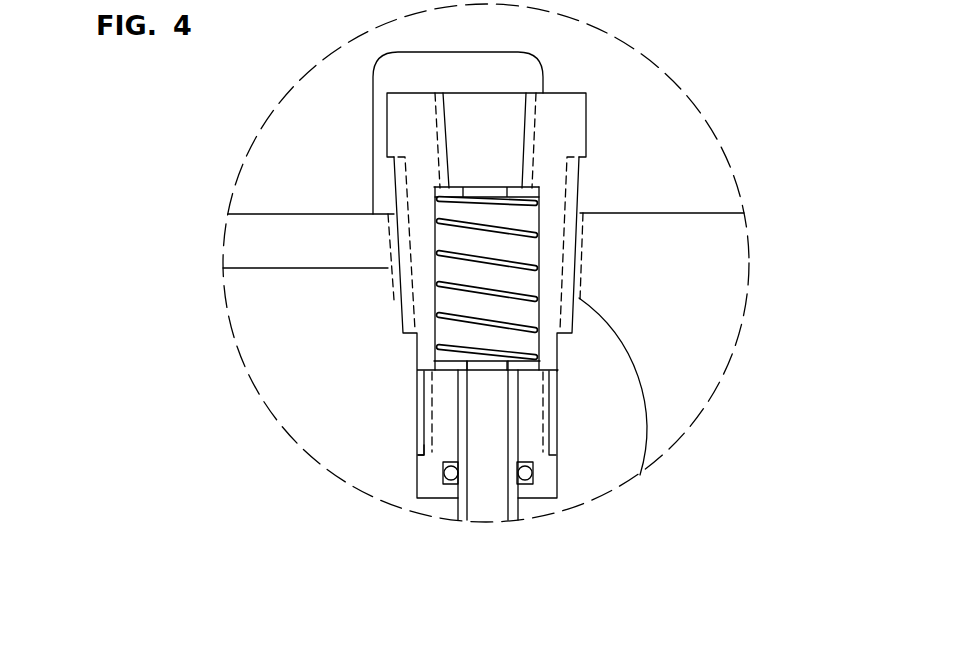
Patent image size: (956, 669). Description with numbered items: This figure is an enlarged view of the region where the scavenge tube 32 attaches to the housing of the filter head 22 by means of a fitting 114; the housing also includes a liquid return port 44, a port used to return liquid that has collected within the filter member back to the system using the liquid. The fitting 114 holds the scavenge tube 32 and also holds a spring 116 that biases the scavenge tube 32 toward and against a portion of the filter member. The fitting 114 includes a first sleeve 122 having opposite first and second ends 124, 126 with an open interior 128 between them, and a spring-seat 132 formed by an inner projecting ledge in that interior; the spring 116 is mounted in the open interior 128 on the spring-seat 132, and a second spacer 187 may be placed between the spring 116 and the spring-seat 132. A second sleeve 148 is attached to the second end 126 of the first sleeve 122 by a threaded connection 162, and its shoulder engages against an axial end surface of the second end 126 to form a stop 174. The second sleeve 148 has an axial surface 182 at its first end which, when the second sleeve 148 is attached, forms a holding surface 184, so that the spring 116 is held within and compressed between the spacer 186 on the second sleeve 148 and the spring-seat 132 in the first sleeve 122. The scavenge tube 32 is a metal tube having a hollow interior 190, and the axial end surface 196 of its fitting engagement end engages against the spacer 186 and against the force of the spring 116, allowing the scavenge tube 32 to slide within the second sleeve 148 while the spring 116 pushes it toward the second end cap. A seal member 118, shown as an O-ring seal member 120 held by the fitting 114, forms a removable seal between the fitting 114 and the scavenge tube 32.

The filter head 22 is at (687, 212).
The scavenge tube 32 is at (518, 512).
The liquid return port 44 is at (583, 212).
The fitting 114 is at (356, 320).
The spring 116 is at (523, 323).
The seal member 118 is at (447, 471).
The O-ring seal member 120 is at (528, 472).
The first sleeve 122 is at (585, 115).
The first end 124 is at (558, 86).
The second end 126 is at (554, 453).
The open interior 128 is at (540, 290).
The spring-seat 132 is at (440, 189).
The second sleeve 148 is at (437, 403).
The threaded connection 162 is at (548, 411).
The stop 174 is at (418, 458).
The axial surface 182 is at (433, 357).
The holding surface 184 is at (420, 370).
The spacer 186 is at (546, 358).
The second spacer 187 is at (530, 188).
The hollow interior 190 is at (466, 512).
The axial end surface 196 is at (469, 368).